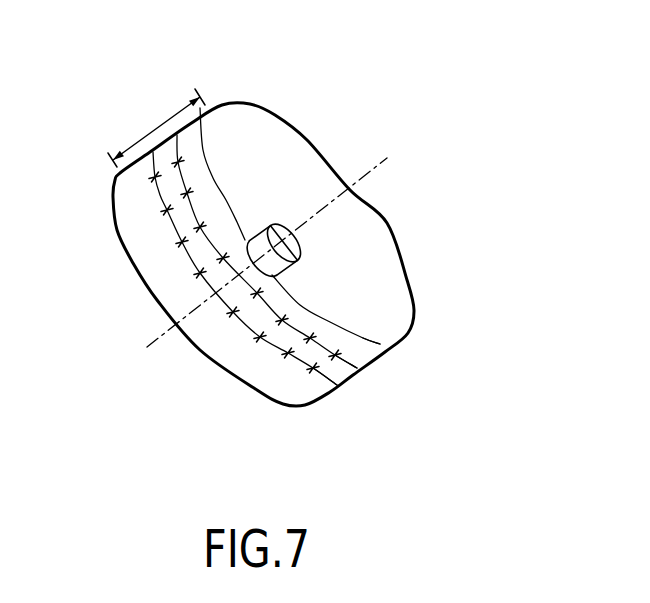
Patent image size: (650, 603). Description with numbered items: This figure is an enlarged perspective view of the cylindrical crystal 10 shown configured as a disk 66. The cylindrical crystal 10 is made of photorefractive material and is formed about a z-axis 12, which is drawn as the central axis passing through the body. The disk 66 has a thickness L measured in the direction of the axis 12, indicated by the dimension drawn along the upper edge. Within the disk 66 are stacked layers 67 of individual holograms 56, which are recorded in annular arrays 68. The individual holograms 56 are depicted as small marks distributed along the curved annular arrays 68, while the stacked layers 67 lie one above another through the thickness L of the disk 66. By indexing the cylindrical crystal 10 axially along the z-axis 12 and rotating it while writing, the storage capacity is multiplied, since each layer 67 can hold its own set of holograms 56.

The cylindrical crystal 10 is at (307, 140).
The z-axis 12 is at (410, 172).
The individual holograms 56 is at (208, 224).
The disk 66 is at (359, 367).
The stacked layers 67 is at (400, 345).
The annular arrays 68 is at (201, 177).
The thickness L is at (157, 128).